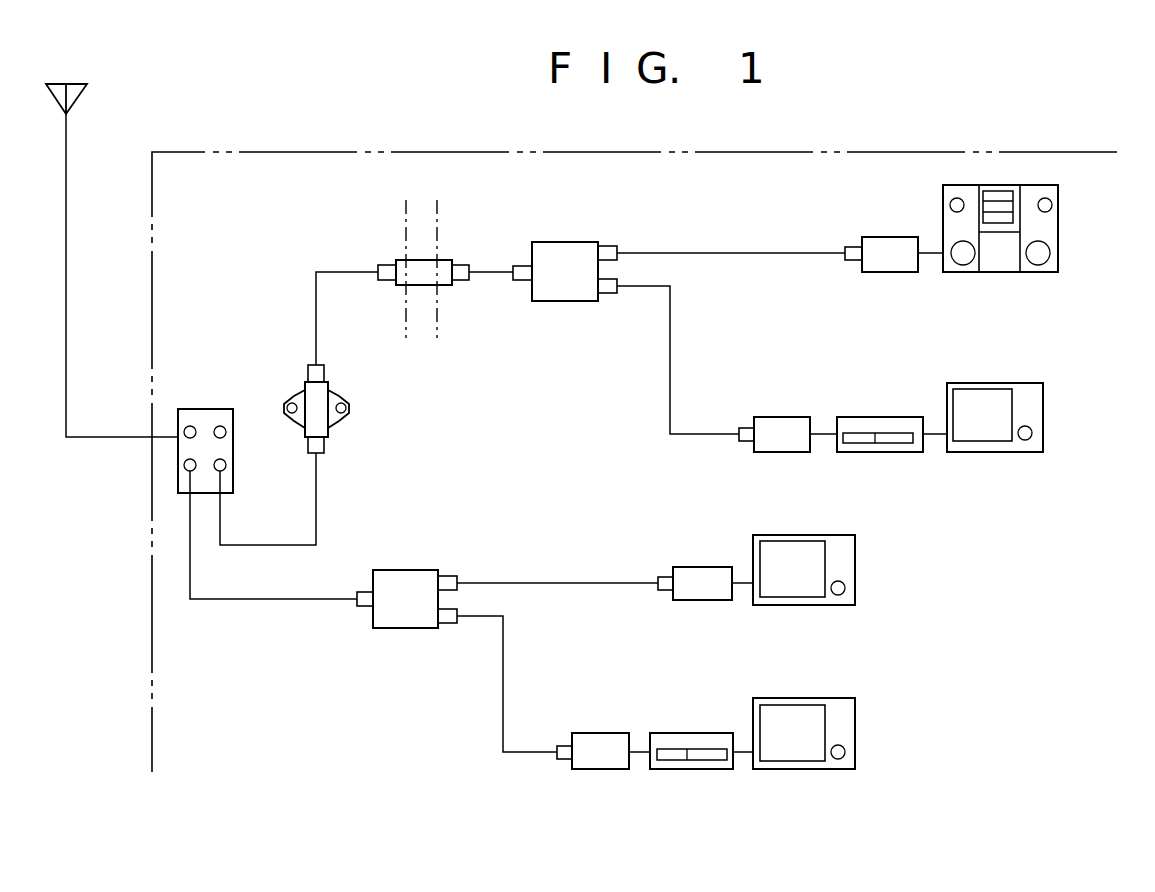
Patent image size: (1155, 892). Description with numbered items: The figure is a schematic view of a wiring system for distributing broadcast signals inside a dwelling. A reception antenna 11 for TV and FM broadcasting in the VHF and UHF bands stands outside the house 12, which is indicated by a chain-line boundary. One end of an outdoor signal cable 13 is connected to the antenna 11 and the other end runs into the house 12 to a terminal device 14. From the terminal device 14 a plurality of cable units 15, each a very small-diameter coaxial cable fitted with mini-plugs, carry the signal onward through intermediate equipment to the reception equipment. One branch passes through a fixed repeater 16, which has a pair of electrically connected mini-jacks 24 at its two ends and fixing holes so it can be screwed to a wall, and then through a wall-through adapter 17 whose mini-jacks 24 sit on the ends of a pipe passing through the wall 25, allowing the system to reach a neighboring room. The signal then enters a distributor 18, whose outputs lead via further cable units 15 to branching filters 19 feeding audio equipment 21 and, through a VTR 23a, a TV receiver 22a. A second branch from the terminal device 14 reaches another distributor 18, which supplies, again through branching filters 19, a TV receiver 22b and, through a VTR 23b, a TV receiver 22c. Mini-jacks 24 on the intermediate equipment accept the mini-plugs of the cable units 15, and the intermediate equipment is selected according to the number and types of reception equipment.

The reception antenna 11 is at (88, 92).
The house 12 is at (400, 150).
The outdoor signal cable 13 is at (67, 223).
The terminal device 14 is at (234, 478).
The cable unit 15 is at (697, 252).
The fixed repeater 16 is at (346, 398).
The wall-through adapter 17 is at (400, 260).
The distributor 18 is at (572, 242).
The branching filter 19 is at (890, 237).
The audio equipment 21 is at (1059, 218).
The TV receiver 22a is at (1044, 392).
The TV receiver 22b is at (856, 552).
The TV receiver 22c is at (856, 712).
The VTR 23a is at (887, 417).
The VTR 23b is at (695, 733).
The mini-jack 24 is at (307, 373).
The wall 25 is at (440, 212).